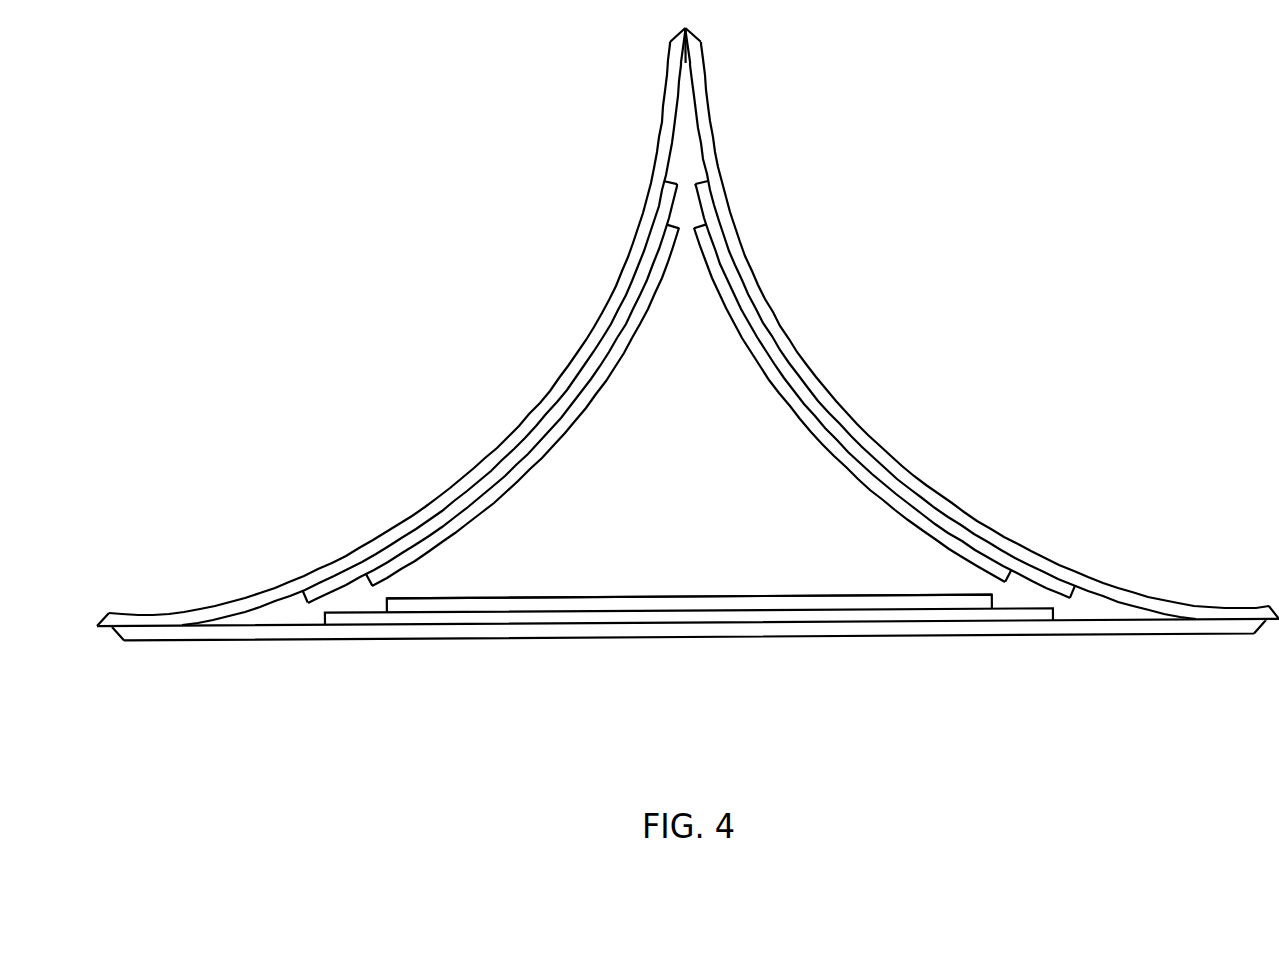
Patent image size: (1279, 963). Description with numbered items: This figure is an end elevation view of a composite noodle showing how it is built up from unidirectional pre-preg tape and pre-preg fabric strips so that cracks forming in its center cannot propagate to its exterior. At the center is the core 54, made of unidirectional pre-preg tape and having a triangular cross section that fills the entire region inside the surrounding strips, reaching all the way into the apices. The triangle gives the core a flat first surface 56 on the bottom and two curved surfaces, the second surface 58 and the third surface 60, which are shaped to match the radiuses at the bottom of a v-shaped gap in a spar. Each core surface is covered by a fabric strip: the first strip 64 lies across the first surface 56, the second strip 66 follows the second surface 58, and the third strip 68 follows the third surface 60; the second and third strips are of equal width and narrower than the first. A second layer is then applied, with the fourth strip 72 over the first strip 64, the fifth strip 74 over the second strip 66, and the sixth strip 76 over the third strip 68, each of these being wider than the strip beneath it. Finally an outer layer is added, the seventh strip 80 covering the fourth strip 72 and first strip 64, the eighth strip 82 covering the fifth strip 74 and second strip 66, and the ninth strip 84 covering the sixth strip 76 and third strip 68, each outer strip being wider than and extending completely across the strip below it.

The core 54 is at (640, 410).
The core first surface 56 is at (568, 598).
The core second surface 58 is at (565, 432).
The core third surface 60 is at (838, 460).
The first pre-preg fabric strip 64 is at (517, 605).
The second pre-preg fabric strip 66 is at (528, 465).
The third pre-preg fabric strip 68 is at (805, 422).
The fourth pre-preg fabric strip 72 is at (455, 620).
The fifth pre-preg fabric strip 74 is at (475, 493).
The sixth pre-preg fabric strip 76 is at (893, 485).
The seventh pre-preg fabric strip 80 is at (403, 633).
The eighth pre-preg fabric strip 82 is at (415, 523).
The ninth pre-preg fabric strip 84 is at (955, 513).